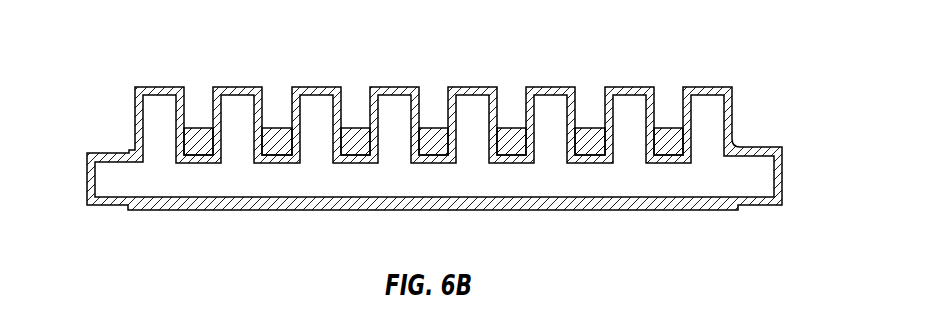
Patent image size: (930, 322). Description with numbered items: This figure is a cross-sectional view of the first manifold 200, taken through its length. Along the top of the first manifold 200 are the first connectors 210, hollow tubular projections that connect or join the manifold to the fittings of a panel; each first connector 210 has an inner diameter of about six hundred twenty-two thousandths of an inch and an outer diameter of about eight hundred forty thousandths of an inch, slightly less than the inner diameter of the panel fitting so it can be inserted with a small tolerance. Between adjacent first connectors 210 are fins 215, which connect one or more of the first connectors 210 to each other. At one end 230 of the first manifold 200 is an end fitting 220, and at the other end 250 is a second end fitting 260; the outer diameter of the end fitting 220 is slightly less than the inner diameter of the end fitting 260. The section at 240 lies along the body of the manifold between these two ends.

The first manifold 200 is at (255, 58).
The first connectors 210 is at (448, 107).
The fins 215 is at (352, 128).
The end fitting 220 is at (103, 206).
The end 230 is at (145, 210).
The base plate middle portion 240 is at (422, 210).
The other end 250 is at (662, 210).
The end fitting 260 is at (753, 210).